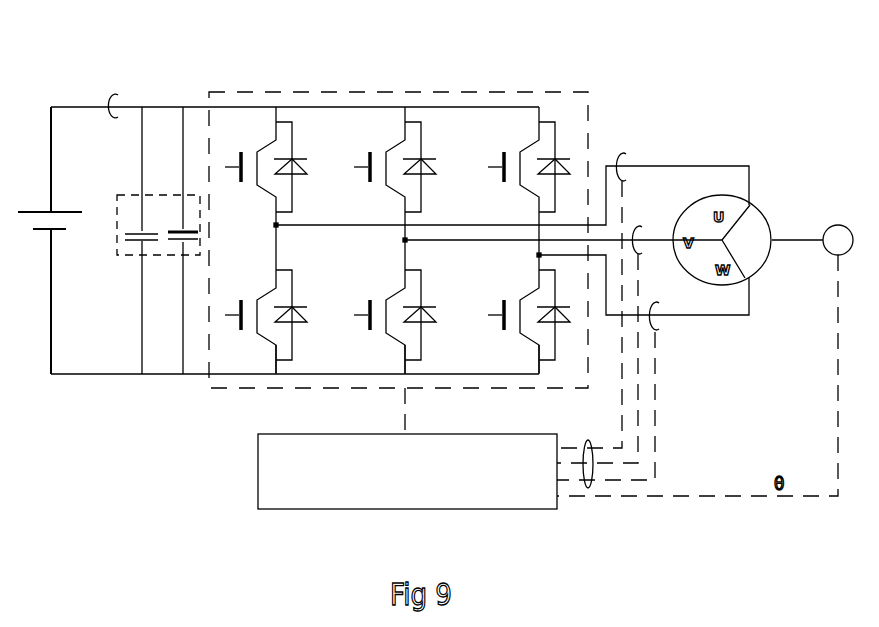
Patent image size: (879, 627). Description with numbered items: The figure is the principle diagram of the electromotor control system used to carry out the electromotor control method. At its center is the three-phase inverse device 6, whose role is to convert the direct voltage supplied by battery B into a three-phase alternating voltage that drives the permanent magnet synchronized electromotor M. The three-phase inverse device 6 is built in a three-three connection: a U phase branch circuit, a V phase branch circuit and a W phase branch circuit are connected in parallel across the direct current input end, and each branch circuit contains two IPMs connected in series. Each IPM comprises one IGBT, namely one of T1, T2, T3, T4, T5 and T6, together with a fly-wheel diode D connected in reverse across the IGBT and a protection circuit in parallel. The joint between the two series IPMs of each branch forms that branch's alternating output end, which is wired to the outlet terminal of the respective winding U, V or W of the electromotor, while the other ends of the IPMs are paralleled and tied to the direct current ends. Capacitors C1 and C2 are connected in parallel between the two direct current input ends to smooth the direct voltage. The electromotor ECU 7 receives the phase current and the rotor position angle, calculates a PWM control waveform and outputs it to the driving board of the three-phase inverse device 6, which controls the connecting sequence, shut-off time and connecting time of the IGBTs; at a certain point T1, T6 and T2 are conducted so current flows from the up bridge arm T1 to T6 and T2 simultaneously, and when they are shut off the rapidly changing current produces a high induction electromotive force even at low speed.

The three-phase inverse device 6 is at (398, 214).
The electromotor ECU 7 is at (258, 455).
The IGBT T1 is at (266, 166).
The IGBT T2 is at (521, 314).
The IGBT T3 is at (384, 166).
The IGBT T4 is at (264, 314).
The IGBT T5 is at (518, 166).
The IGBT T6 is at (386, 314).
The capacitor C1 is at (179, 240).
The capacitor C2 is at (138, 240).